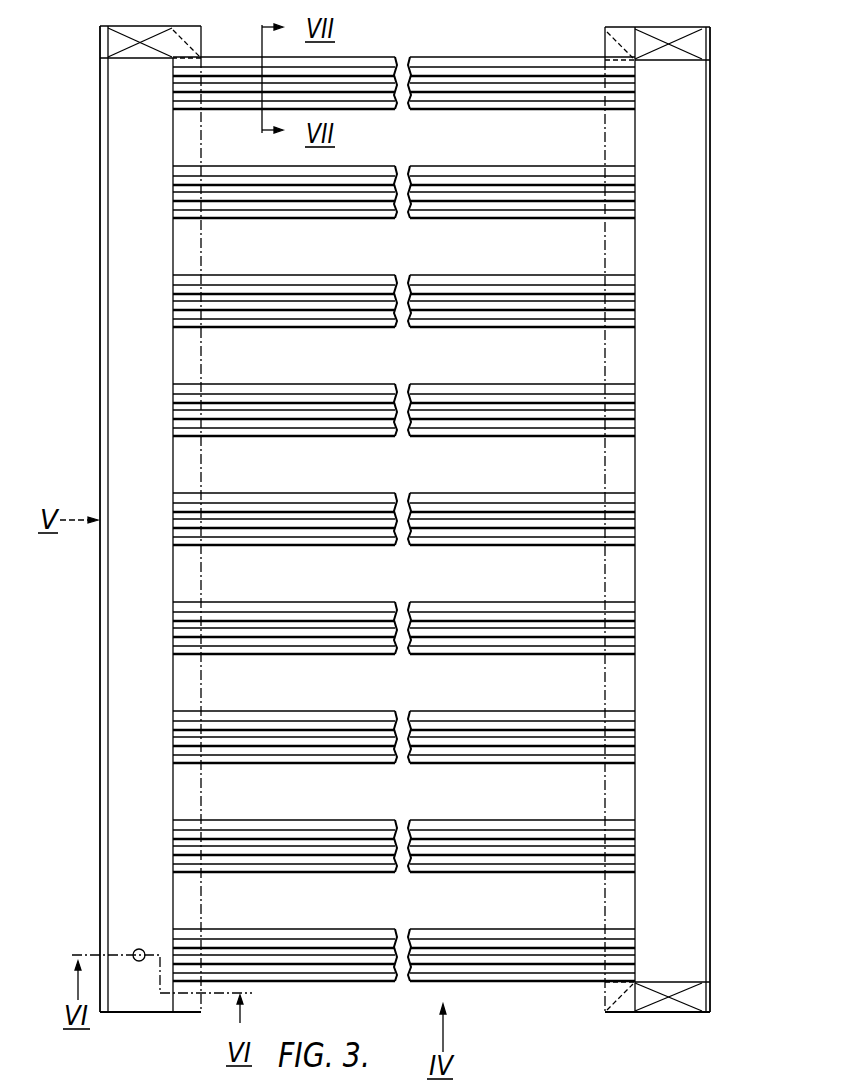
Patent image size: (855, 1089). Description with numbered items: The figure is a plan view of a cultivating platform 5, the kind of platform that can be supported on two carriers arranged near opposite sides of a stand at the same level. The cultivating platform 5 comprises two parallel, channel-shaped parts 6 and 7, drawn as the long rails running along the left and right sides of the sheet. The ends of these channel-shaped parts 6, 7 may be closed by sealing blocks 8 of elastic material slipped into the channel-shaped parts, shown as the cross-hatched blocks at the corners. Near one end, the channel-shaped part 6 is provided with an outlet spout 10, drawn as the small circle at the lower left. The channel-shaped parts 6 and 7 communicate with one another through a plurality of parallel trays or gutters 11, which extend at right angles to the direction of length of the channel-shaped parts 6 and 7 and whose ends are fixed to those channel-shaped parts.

The cultivating platform 5 is at (94, 788).
The channel-shaped part 6 is at (133, 995).
The channel-shaped part 7 is at (688, 867).
The sealing blocks 8 is at (160, 33).
The outlet spout 10 is at (133, 952).
The trays or gutters 11 is at (255, 933).